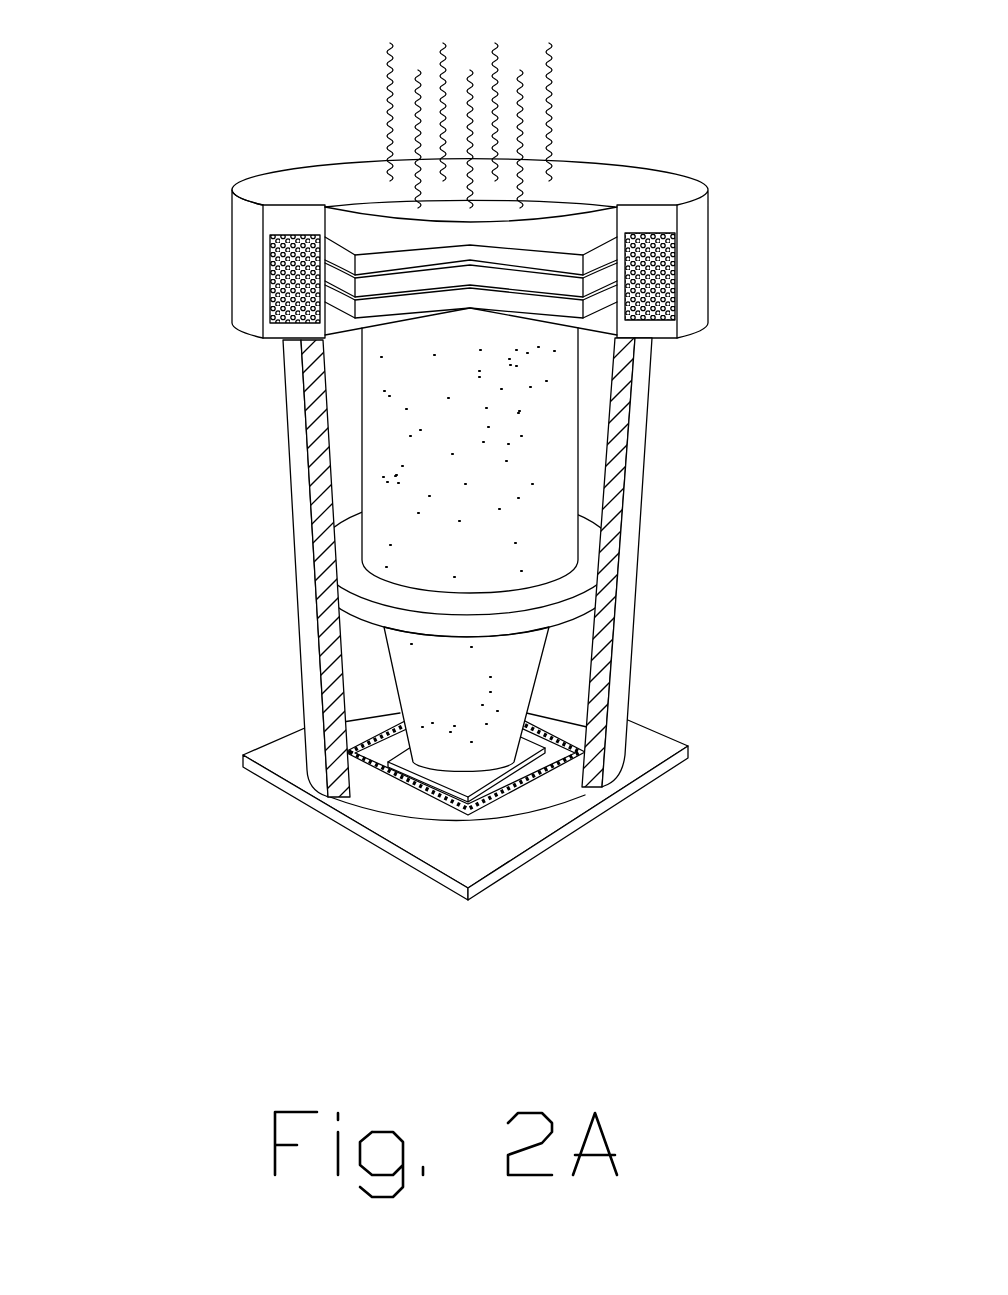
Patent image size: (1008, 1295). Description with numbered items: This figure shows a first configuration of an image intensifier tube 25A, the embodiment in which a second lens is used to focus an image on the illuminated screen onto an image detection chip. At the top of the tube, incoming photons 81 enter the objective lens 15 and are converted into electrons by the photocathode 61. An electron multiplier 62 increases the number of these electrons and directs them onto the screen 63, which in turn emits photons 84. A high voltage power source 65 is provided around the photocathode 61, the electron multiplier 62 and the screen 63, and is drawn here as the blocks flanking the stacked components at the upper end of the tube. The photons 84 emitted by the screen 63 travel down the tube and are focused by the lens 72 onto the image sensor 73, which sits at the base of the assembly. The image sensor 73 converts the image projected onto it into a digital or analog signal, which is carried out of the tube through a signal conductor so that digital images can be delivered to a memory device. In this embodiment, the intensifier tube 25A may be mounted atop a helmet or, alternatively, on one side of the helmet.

The objective lens 15 is at (360, 200).
The photons 81 is at (690, 53).
The photocathode 61 is at (320, 253).
The electron multiplier 62 is at (617, 280).
The screen 63 is at (592, 312).
The high voltage power source 65 is at (272, 317).
The photons 84 is at (540, 459).
The lens 72 is at (368, 611).
The image sensor 73 is at (367, 778).
The intensifier tube 25A is at (700, 923).